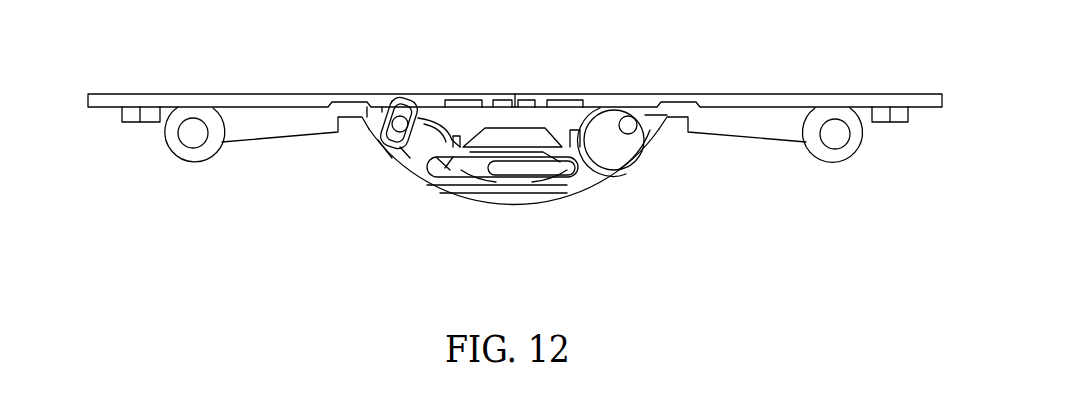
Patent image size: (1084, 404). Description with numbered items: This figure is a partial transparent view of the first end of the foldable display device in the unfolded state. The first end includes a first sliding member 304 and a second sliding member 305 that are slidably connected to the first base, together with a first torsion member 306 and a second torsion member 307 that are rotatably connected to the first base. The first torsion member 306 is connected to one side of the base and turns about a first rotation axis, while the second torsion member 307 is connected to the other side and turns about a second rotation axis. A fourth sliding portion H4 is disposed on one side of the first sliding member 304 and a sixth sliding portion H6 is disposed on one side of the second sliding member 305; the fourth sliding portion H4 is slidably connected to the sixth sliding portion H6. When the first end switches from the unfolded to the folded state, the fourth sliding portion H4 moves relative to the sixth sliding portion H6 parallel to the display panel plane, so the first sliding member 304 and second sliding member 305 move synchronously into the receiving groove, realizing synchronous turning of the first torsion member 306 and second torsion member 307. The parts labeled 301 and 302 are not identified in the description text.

The base plate 301 is at (895, 93).
The mounting block 302 is at (117, 93).
The first sliding member 304 is at (608, 183).
The second sliding member 305 is at (404, 153).
The first torsion member 306 is at (845, 162).
The second torsion member 307 is at (203, 168).
The fourth sliding portion H4 is at (567, 185).
The sixth sliding portion H6 is at (455, 177).